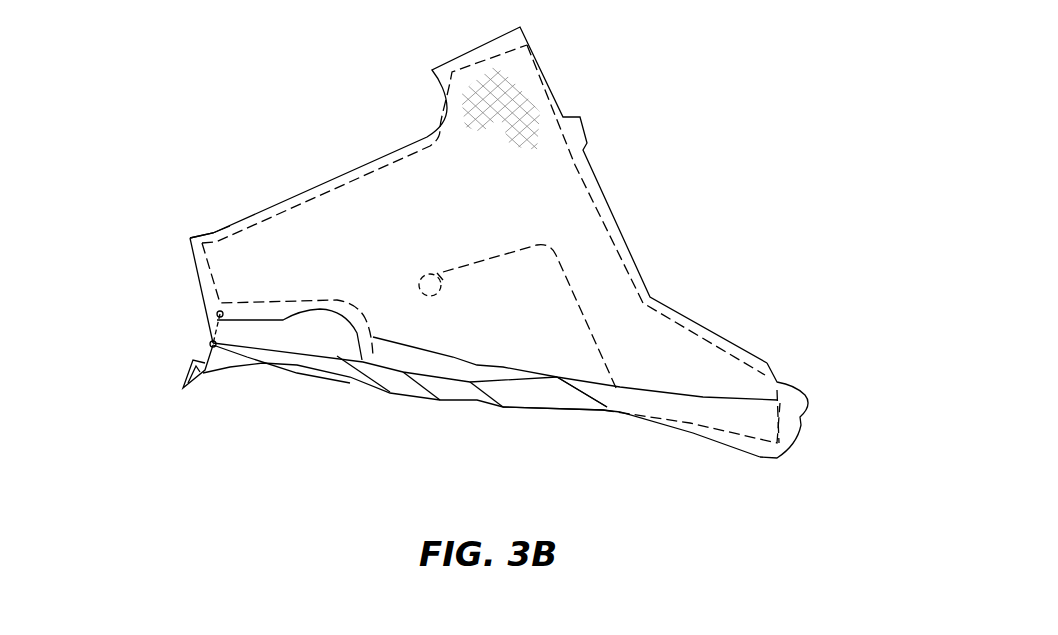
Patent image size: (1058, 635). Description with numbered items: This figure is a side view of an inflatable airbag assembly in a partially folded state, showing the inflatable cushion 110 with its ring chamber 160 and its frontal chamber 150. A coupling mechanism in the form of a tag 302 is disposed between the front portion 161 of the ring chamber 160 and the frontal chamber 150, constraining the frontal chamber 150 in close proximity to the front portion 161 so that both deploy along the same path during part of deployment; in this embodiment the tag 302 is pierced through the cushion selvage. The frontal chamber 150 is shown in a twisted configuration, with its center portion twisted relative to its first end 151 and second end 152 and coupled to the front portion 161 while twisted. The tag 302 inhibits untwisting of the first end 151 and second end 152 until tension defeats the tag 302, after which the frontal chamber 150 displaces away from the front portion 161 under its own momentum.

The inflatable cushion 110 is at (756, 137).
The ring chamber 160 is at (315, 165).
The front portion of the ring chamber 161 is at (200, 224).
The tag 302 is at (212, 341).
The frontal chamber 150 is at (335, 401).
The first end of the frontal chamber 151 is at (598, 431).
The second end of the frontal chamber 152 is at (568, 428).